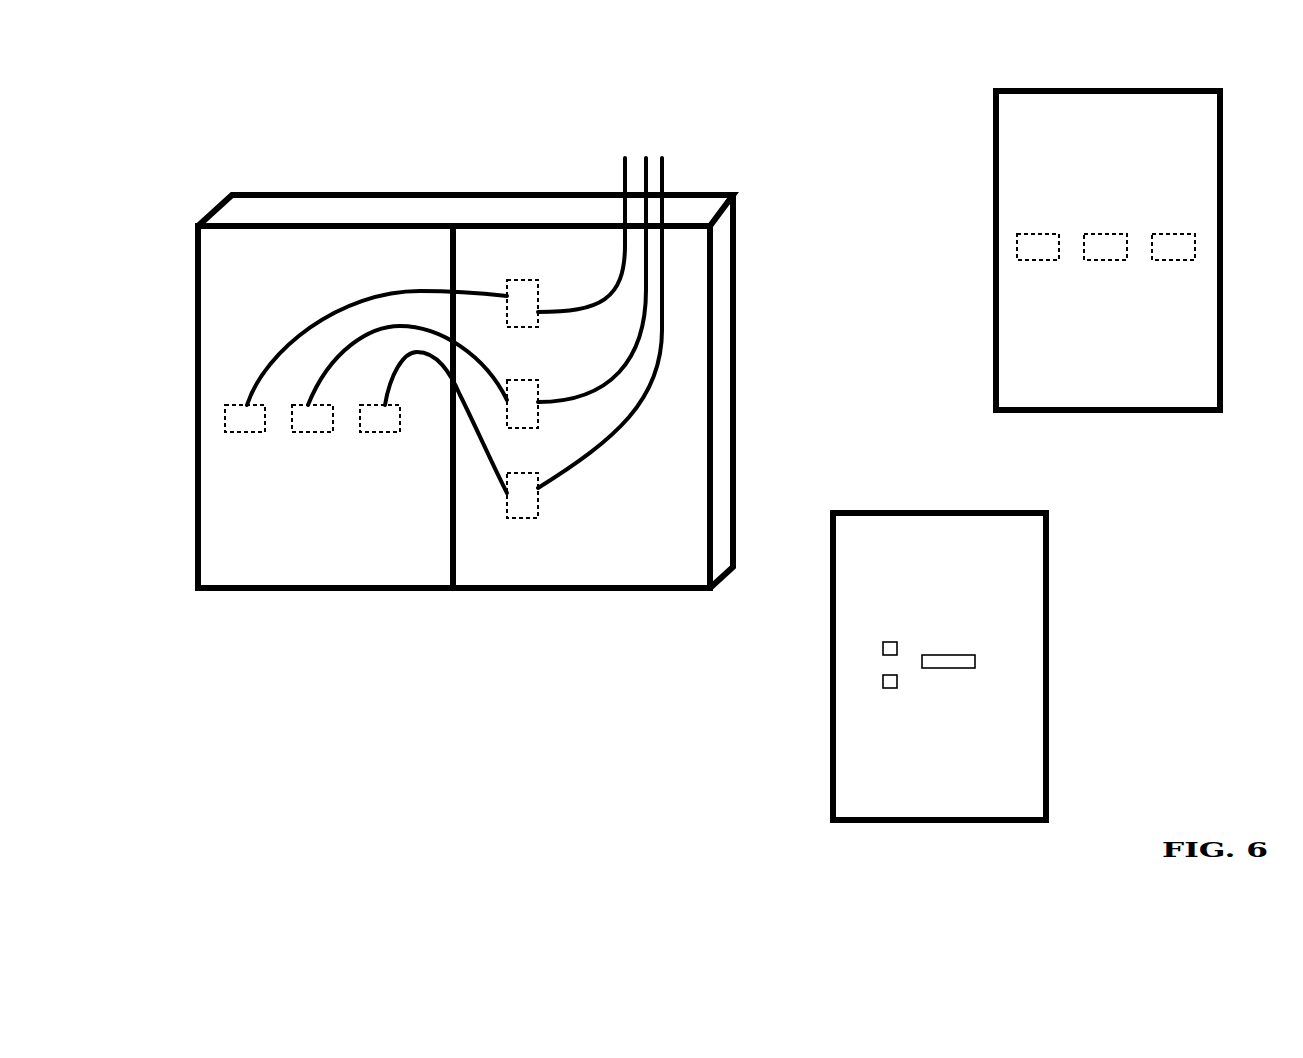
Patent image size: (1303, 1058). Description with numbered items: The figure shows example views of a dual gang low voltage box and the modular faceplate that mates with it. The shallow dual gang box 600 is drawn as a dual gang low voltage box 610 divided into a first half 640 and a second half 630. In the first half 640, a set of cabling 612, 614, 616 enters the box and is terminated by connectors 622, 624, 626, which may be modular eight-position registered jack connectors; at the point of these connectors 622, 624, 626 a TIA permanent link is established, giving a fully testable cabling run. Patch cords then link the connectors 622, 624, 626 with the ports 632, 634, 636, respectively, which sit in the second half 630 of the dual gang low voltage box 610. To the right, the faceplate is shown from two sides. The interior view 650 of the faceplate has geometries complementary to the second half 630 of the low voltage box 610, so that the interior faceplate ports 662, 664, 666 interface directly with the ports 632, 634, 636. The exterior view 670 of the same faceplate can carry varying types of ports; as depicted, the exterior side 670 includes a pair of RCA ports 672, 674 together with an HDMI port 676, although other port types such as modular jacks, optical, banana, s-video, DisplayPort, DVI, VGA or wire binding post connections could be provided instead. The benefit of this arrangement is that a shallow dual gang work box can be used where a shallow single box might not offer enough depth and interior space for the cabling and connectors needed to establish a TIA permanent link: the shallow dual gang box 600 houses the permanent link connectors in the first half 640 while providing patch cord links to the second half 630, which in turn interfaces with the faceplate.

The shallow dual gang box 600 is at (364, 167).
The dual gang low voltage box 610 is at (262, 212).
The cabling 612 is at (625, 158).
The cabling 614 is at (646, 157).
The cabling 616 is at (662, 157).
The connector 622 is at (520, 280).
The connector 624 is at (520, 380).
The connector 626 is at (520, 473).
The second half 630 is at (236, 320).
The RJ-45 port 632 is at (238, 434).
The RJ-45 port 634 is at (308, 434).
The RJ-45 port 636 is at (375, 434).
The first half 640 is at (600, 557).
The interior view of faceplate 650 is at (1010, 66).
The interior faceplate port 662 is at (1030, 262).
The interior faceplate port 664 is at (1108, 262).
The interior faceplate port 666 is at (1170, 232).
The exterior view of faceplate 670 is at (871, 489).
The RCA port 672 is at (892, 642).
The RCA port 674 is at (895, 690).
The HDMI port 676 is at (945, 668).